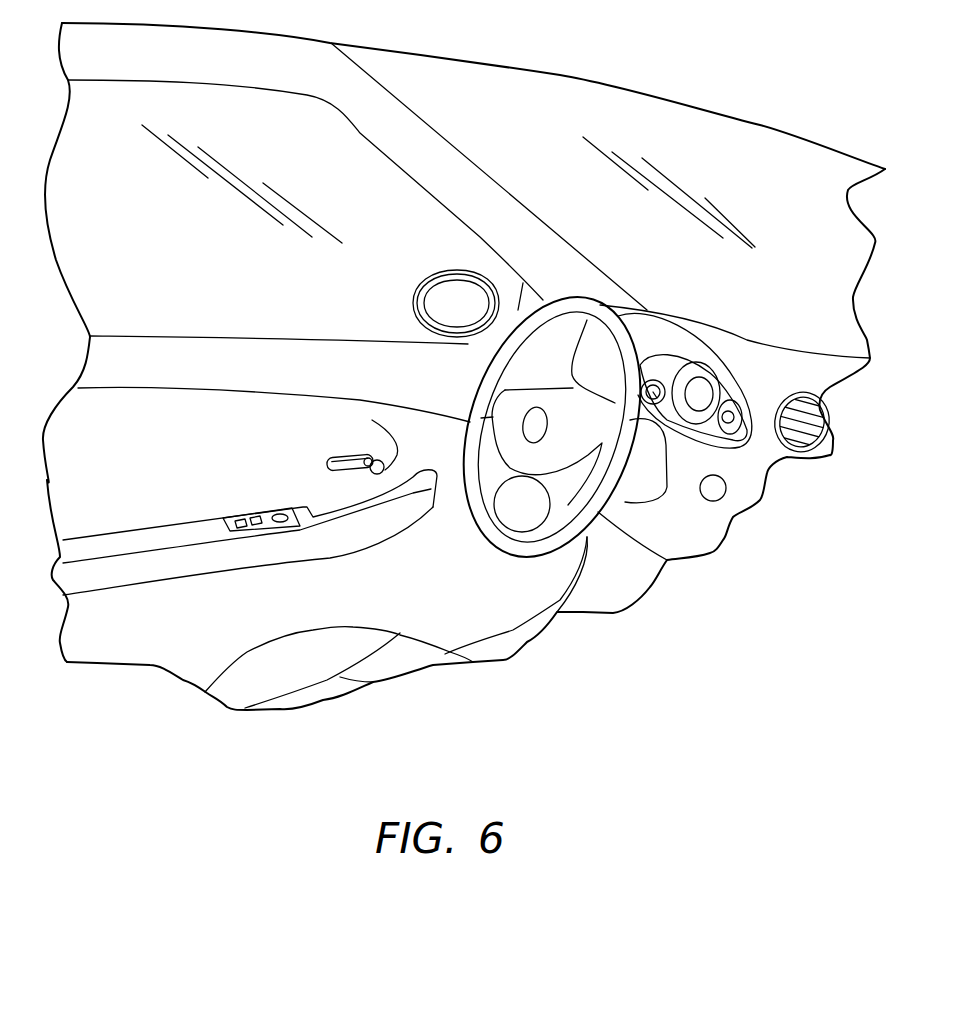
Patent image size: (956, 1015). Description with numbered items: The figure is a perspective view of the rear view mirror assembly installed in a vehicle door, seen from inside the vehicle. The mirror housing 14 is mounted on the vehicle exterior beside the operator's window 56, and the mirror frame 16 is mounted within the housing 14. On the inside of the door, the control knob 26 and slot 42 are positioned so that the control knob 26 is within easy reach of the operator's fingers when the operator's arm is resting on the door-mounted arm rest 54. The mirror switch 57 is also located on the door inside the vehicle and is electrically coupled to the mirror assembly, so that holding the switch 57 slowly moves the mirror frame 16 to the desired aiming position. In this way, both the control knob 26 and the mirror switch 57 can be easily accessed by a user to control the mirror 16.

The window 56 is at (232, 250).
The housing 14 is at (467, 267).
The mirror frame 16 is at (457, 297).
The slot 42 is at (348, 457).
The control knob 26 is at (400, 467).
The arm rest 54 is at (178, 565).
The switch 57 is at (247, 530).